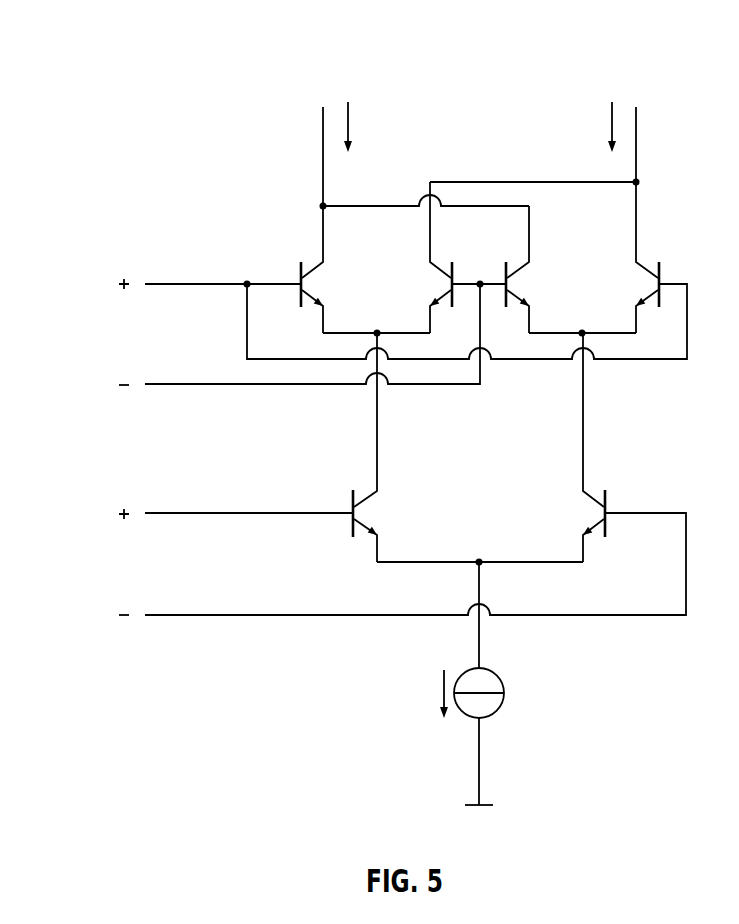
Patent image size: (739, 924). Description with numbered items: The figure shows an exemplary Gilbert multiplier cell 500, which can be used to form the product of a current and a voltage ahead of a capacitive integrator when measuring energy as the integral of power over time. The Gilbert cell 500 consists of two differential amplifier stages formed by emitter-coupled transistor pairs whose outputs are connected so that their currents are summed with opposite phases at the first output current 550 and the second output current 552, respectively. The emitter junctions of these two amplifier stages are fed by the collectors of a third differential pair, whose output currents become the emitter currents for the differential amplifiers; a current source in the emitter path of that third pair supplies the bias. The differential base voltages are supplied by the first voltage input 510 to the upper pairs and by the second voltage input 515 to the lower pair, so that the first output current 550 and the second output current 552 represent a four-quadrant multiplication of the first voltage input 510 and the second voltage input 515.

The Gilbert multiplier cell 500 is at (163, 43).
The V1 input 510 is at (127, 332).
The V2 input 515 is at (112, 565).
The output current Iout1 550 is at (398, 108).
The output current Iout2 552 is at (566, 100).